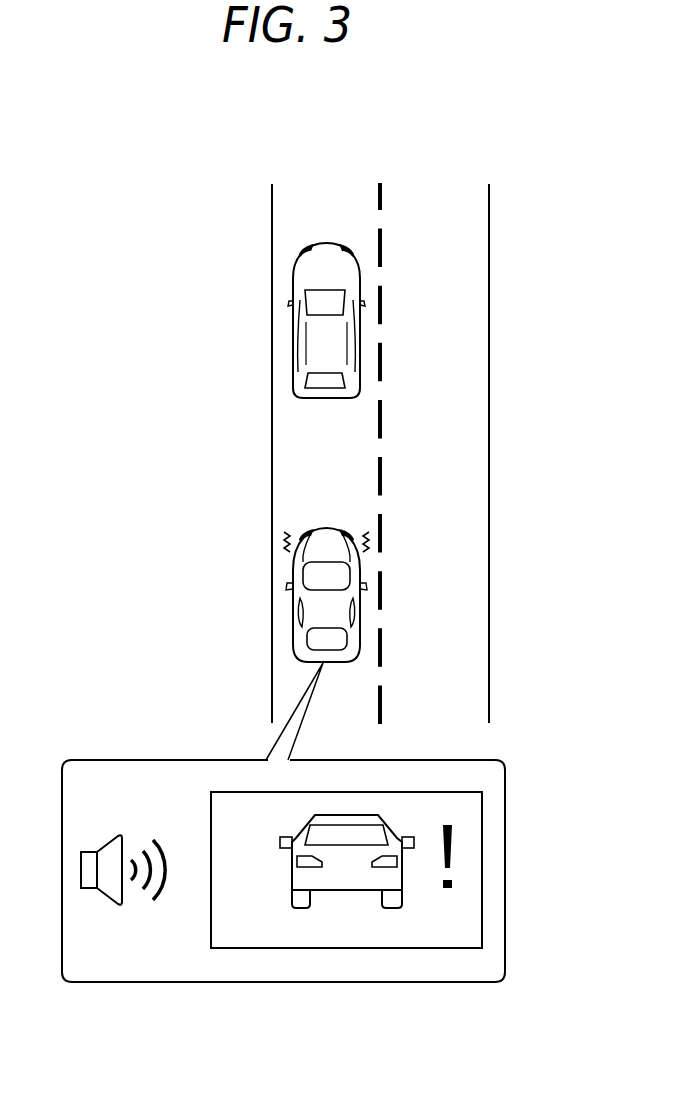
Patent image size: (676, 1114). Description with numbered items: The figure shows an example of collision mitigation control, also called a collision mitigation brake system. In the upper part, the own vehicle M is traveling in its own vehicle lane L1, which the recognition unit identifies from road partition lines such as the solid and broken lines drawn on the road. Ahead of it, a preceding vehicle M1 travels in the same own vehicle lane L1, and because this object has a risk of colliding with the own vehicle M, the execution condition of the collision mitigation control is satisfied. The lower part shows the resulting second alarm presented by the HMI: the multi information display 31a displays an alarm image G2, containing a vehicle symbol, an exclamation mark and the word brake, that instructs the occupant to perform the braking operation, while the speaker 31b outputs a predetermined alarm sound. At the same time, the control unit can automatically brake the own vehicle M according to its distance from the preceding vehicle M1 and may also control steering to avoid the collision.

The preceding vehicle M1 is at (307, 278).
The own vehicle lane L1 is at (288, 488).
The own vehicle M is at (327, 610).
The multi information display (MID) 31a is at (211, 810).
The speaker 31b is at (107, 900).
The alarm image G2 is at (466, 902).